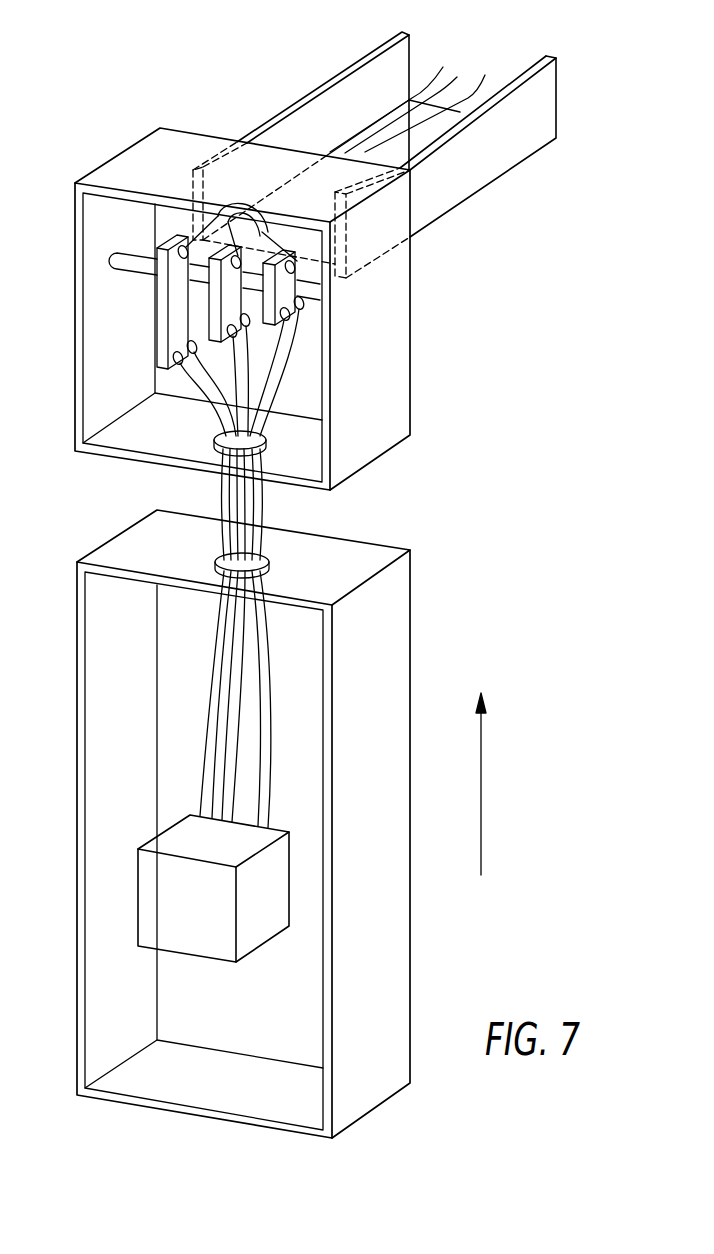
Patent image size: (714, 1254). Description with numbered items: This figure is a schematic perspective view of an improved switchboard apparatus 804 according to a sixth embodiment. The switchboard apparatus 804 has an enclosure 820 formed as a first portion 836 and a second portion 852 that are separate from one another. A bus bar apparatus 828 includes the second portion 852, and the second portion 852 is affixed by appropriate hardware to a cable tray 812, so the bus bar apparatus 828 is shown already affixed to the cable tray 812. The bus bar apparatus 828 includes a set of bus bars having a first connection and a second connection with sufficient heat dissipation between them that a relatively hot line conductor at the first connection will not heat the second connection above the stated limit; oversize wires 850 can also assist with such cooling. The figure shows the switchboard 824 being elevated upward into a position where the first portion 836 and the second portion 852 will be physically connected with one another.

The switchboard apparatus 804 is at (512, 484).
The cable tray 812 is at (515, 168).
The enclosure 820 is at (405, 490).
The switchboard 824 is at (415, 705).
The bus bar apparatus 828 is at (416, 313).
The first portion 836 is at (416, 618).
The oversize wires 850 is at (214, 635).
The second portion 852 is at (75, 300).